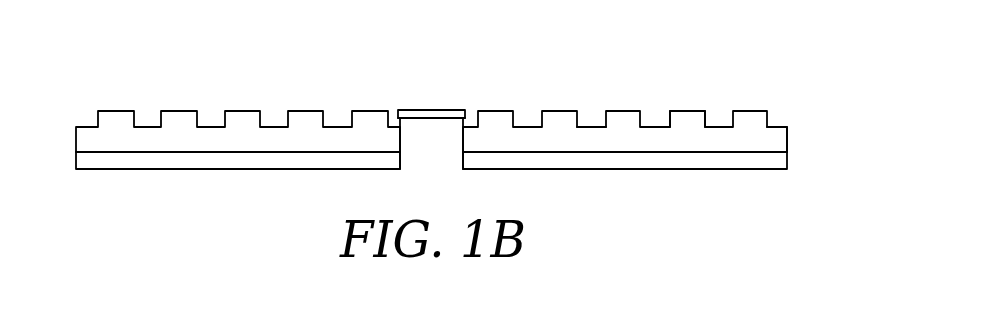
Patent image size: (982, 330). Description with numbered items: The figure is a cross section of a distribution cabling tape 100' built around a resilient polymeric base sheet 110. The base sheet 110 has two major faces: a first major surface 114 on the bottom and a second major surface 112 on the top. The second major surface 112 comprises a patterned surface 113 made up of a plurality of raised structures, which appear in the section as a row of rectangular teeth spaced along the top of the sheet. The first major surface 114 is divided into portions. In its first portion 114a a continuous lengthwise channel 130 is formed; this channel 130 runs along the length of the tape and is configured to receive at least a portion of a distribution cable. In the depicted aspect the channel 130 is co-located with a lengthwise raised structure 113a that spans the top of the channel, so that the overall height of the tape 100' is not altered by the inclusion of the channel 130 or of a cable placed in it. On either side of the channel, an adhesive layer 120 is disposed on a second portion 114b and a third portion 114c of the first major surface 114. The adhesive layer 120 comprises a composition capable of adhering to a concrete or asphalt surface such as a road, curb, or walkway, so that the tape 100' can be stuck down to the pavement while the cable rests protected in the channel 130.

The distribution cabling tape 100' is at (465, 128).
The resilient polymeric base sheet 110 is at (780, 139).
The second major surface 112 is at (777, 127).
The patterned surface 113 is at (684, 110).
The first major surface 114 is at (773, 150).
The lengthwise raised structure 113a is at (450, 111).
The first portion 114a is at (428, 123).
The second portion 114b is at (217, 152).
The third portion 114c is at (595, 152).
The adhesive layer 120 is at (702, 162).
The continuous lengthwise channel 130 is at (429, 152).